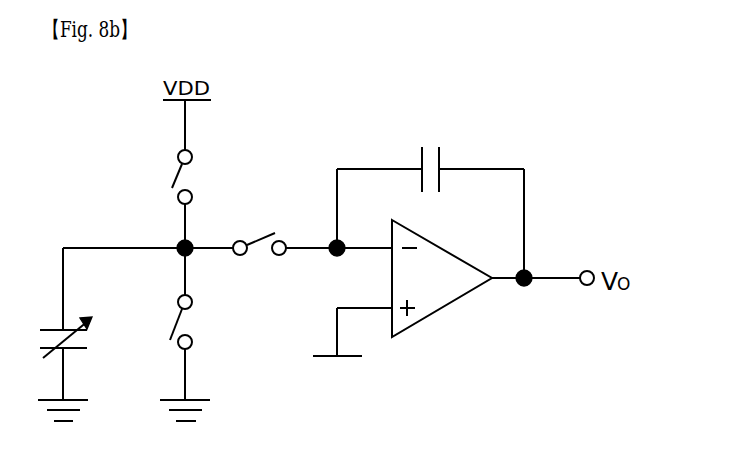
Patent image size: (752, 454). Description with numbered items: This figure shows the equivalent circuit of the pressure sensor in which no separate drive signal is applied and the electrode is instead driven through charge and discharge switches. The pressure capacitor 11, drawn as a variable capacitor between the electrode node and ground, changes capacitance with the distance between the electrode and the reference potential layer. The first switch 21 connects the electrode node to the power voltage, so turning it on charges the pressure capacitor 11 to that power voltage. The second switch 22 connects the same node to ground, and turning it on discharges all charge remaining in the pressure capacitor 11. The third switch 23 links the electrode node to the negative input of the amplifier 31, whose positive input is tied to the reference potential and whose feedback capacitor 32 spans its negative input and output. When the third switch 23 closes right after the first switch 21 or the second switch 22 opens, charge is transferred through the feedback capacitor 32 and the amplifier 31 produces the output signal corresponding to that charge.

The pressure capacitor 11 is at (93, 360).
The first switch 21 is at (190, 176).
The second switch 22 is at (198, 328).
The third switch 23 is at (262, 253).
The amplifier 31 is at (443, 307).
The feedback capacitor 32 is at (435, 158).